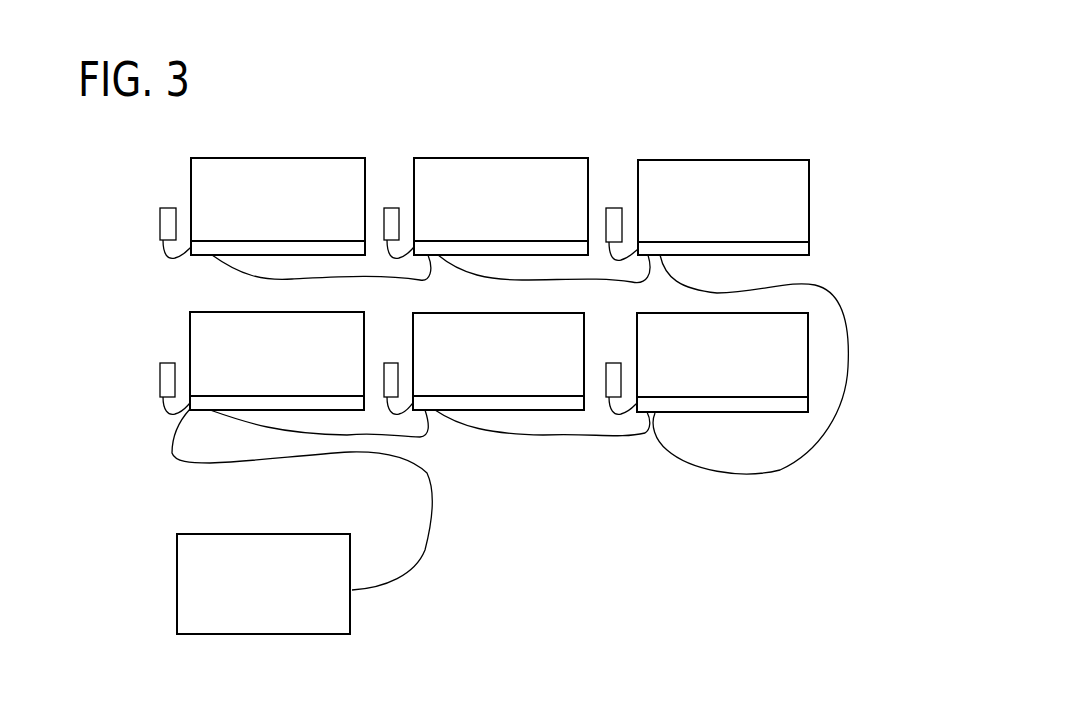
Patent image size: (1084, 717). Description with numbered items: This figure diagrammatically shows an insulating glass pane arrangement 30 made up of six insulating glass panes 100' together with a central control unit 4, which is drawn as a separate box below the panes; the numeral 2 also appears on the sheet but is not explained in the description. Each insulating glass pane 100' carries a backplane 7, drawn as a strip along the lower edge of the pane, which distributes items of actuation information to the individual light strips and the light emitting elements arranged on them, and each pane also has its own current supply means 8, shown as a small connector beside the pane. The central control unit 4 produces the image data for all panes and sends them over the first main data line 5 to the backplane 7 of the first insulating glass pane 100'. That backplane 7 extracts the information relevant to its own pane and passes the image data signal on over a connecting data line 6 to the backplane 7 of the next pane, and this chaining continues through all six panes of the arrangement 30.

The photovoltaic system 2 is at (614, 6).
The insulating glass pane arrangement 30 is at (828, 68).
The insulating glass pane 100' is at (496, 251).
The current supply means 8 is at (613, 202).
The backplane 7 is at (812, 248).
The connecting data line 6 is at (437, 442).
The first main data line 5 is at (438, 508).
The central control unit 4 is at (265, 635).